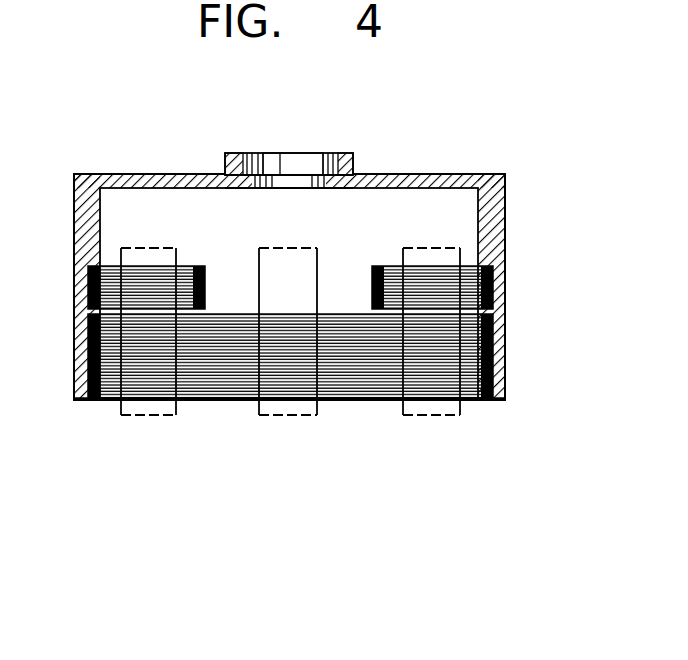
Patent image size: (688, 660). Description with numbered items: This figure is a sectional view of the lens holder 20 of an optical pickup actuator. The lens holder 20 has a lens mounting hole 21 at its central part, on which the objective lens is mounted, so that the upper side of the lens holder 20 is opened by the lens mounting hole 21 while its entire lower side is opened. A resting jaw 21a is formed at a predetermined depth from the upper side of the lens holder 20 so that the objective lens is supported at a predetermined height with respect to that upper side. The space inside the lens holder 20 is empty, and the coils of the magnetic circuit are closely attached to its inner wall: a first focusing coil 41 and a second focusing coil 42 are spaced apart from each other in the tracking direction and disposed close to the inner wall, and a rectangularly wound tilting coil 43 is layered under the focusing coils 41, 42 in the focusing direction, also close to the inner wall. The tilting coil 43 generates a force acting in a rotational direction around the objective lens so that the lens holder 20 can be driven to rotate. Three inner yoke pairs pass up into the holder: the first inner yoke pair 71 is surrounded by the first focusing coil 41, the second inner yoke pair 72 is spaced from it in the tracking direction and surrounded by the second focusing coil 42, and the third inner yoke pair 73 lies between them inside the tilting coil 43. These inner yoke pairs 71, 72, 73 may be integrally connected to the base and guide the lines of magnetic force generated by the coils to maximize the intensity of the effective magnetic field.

The lens holder 20 is at (518, 165).
The lens mounting hole 21 is at (299, 133).
The resting jaw 21a is at (293, 129).
The first focusing coil 41 is at (432, 219).
The second focusing coil 42 is at (146, 219).
The tilting coil 43 is at (290, 396).
The first inner yoke pair 71 is at (431, 372).
The second inner yoke pair 72 is at (148, 372).
The third inner yoke pair 73 is at (288, 372).